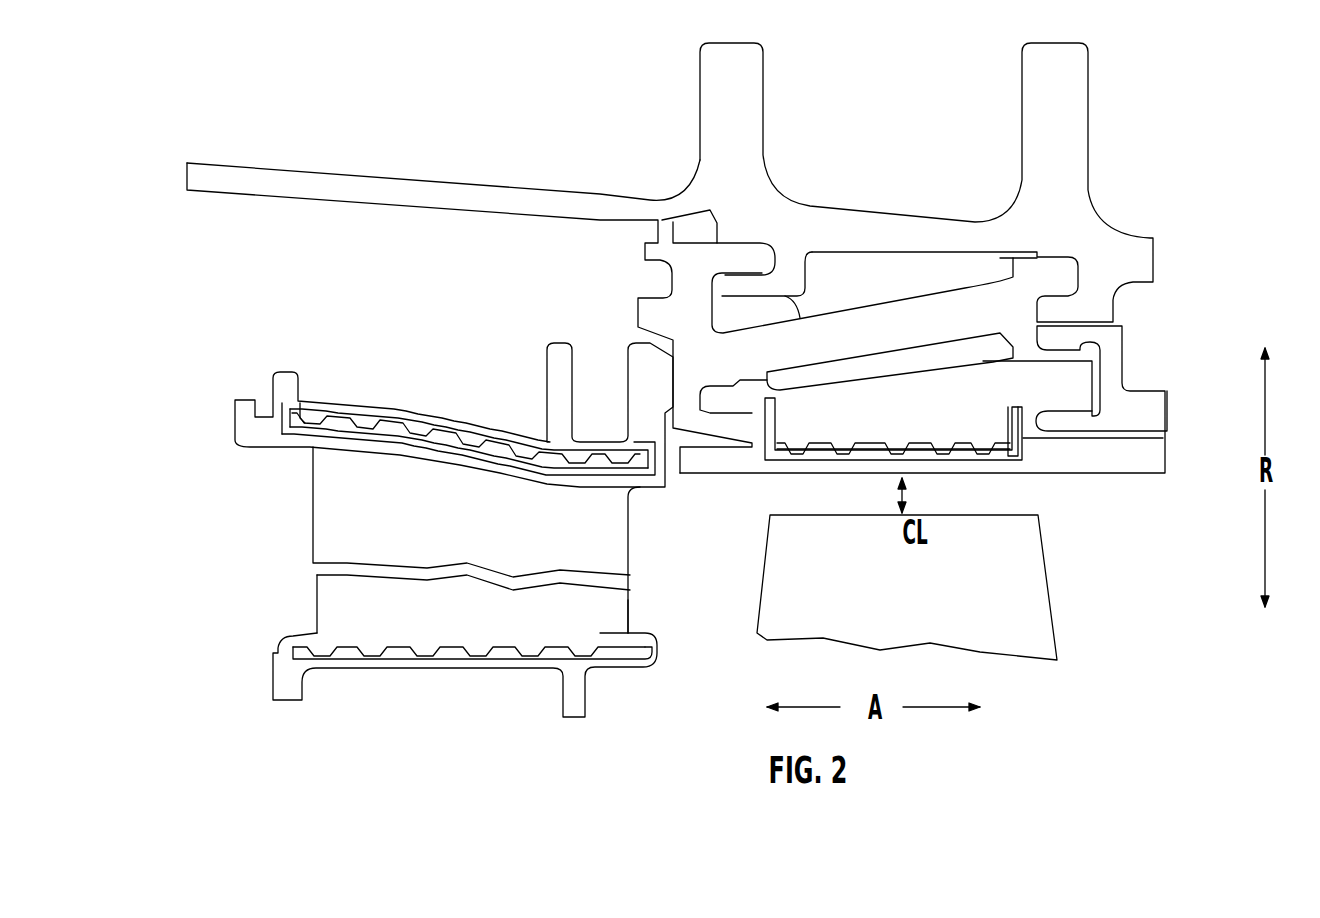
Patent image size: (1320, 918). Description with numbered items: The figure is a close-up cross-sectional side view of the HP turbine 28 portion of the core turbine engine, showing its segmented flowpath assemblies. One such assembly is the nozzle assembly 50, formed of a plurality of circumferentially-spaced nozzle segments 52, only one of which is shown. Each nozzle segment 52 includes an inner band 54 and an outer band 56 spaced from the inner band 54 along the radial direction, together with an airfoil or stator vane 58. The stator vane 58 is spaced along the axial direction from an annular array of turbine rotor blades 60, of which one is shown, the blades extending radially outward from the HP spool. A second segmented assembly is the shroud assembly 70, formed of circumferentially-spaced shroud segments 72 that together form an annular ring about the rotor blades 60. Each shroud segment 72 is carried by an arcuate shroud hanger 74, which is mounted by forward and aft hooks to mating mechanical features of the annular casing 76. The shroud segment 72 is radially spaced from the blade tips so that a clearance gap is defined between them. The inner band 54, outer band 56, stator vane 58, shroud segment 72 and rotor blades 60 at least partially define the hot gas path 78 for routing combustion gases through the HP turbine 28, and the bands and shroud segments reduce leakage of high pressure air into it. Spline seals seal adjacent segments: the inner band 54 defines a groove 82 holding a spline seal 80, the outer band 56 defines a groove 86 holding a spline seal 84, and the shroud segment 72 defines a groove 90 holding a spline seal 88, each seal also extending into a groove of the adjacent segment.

The HP turbine 28 is at (341, 127).
The nozzle assembly 50 is at (418, 368).
The nozzle segment 52 is at (420, 594).
The inner band 54 is at (292, 678).
The outer band 56 is at (242, 418).
The stator vane 58 is at (448, 534).
The turbine rotor blade 60 is at (893, 598).
The shroud assembly 70 is at (952, 437).
The shroud segment 72 is at (1145, 458).
The shroud hanger 74 is at (867, 322).
The casing 76 is at (770, 197).
The hot gas path 78 is at (677, 594).
The spline seal 80 is at (340, 655).
The groove 82 is at (283, 649).
The spline seal 84 is at (438, 432).
The groove 86 is at (290, 402).
The spline seal 88 is at (855, 452).
The groove 90 is at (1004, 408).